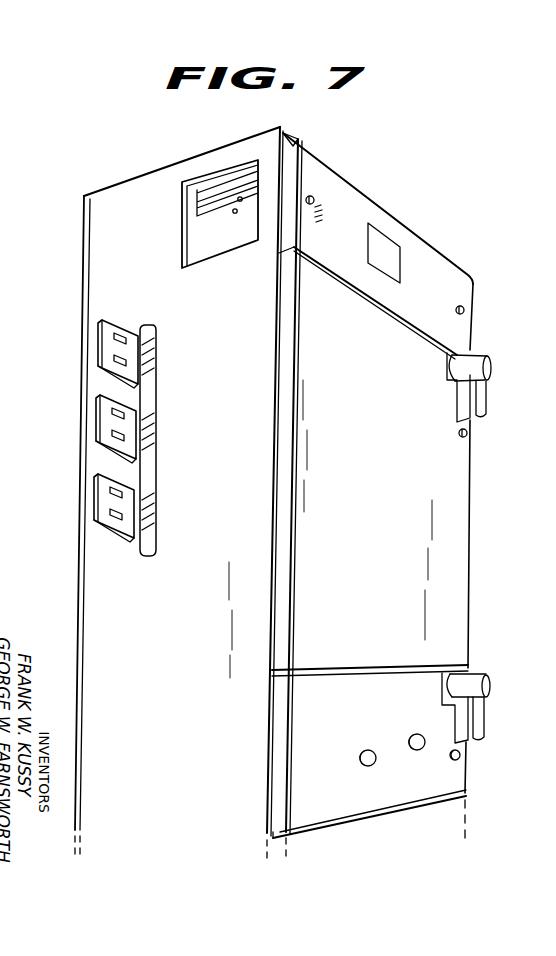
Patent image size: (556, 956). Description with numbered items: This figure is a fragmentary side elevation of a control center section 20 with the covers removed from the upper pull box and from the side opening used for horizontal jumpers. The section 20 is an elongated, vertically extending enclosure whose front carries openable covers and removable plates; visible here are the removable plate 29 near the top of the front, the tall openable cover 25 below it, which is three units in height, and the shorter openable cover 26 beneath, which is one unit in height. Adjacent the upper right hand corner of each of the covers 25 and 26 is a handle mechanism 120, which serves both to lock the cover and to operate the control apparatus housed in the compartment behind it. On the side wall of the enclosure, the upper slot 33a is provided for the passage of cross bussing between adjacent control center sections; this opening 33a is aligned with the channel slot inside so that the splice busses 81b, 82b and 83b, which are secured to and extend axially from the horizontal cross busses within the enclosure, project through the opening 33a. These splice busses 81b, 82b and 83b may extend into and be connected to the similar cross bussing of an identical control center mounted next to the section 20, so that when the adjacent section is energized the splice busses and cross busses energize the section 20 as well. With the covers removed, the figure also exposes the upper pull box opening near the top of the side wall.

The control center section 20 is at (476, 533).
The removable plate 29 is at (445, 308).
The openable cover 25 is at (400, 448).
The openable cover 26 is at (400, 721).
The handle mechanism 120 is at (492, 398).
The upper slot 33a is at (150, 406).
The splice bus 82b is at (97, 342).
The splice bus 81b is at (93, 420).
The splice bus 83b is at (96, 498).